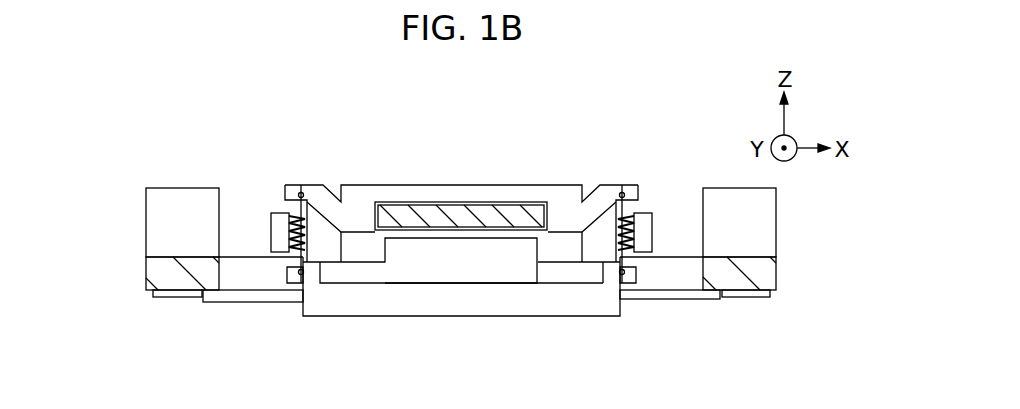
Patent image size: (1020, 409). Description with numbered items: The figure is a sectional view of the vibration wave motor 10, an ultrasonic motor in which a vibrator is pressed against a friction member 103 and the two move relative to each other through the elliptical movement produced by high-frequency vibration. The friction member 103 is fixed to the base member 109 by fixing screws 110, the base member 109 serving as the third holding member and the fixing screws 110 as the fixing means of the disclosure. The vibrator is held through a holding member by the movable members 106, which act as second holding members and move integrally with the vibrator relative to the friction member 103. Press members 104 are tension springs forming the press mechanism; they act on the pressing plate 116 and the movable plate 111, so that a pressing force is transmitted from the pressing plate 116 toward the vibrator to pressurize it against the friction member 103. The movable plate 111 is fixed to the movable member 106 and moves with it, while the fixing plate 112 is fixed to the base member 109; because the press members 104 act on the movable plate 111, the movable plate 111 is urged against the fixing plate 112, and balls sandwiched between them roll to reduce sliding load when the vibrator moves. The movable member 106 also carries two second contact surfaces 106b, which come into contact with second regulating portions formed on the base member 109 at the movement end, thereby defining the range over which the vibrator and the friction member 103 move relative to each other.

The vibration wave motor 10 is at (499, 143).
The friction member 103 is at (678, 274).
The press members 104 is at (300, 193).
The movable member 106 is at (410, 212).
The second contact surfaces 106b is at (272, 224).
The base member 109 is at (180, 208).
The fixing screws 110 is at (181, 298).
The movable plate 111 is at (457, 317).
The fixing plate 112 is at (257, 303).
The pressing plate 116 is at (354, 200).